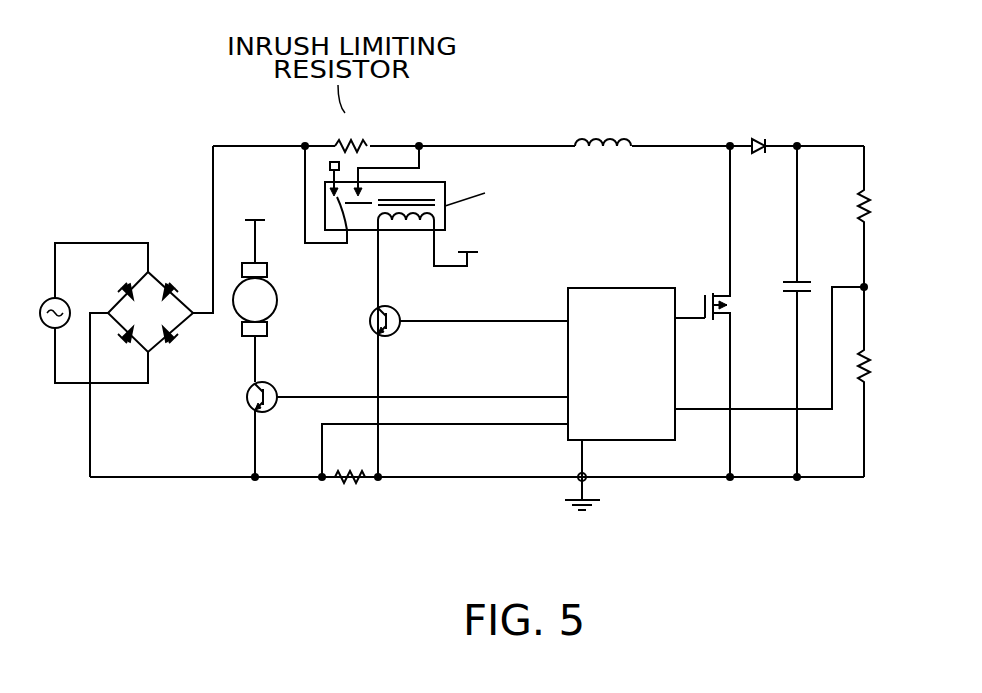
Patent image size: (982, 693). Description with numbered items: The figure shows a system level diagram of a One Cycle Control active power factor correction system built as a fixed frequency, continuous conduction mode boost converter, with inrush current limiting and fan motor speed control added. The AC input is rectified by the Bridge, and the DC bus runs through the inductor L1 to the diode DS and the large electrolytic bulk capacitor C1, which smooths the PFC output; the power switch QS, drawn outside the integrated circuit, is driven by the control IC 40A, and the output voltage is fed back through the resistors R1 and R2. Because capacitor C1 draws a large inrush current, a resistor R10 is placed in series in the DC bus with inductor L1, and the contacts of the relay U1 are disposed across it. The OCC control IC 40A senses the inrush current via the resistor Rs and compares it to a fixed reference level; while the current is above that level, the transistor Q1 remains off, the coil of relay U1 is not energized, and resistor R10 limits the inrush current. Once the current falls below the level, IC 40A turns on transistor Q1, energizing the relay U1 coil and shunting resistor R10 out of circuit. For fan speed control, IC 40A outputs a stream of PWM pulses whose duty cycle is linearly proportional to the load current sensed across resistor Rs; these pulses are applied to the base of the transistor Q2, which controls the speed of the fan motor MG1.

The control IC 40A is at (657, 421).
The resistor R10 is at (348, 133).
The relay U1 is at (417, 211).
The inductor L1 is at (603, 127).
The diode DS is at (752, 131).
The power switch QS is at (722, 311).
The capacitor C1 is at (812, 311).
The resistor R1 is at (881, 216).
The resistor R2 is at (881, 382).
The transistor Q1 is at (449, 353).
The transistor Q2 is at (383, 423).
The fan motor MG1 is at (271, 291).
The resistor Rs is at (445, 468).
The bridge rectifier Bridge is at (132, 360).